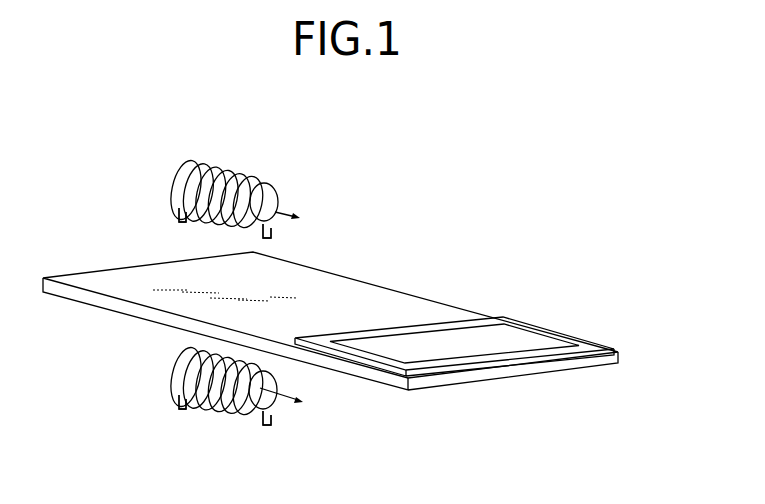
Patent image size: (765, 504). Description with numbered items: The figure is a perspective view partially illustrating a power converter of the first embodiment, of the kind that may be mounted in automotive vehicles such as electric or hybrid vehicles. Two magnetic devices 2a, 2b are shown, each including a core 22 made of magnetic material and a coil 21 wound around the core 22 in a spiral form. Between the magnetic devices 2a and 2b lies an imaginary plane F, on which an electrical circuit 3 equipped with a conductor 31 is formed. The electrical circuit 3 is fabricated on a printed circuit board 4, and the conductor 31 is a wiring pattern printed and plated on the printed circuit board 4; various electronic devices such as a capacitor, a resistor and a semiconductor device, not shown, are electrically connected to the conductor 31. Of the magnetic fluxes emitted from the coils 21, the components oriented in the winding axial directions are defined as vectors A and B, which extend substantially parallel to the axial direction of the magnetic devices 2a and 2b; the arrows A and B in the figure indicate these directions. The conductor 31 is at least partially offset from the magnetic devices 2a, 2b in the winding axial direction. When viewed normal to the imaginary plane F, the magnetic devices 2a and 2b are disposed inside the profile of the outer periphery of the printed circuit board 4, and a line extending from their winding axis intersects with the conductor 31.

The magnetic device 2a is at (222, 172).
The magnetic device 2b is at (192, 408).
The coil 21 is at (185, 158).
The core 22 is at (266, 200).
The electrical circuit 3 is at (475, 297).
The conductor 31 is at (492, 323).
The printed circuit board 4 is at (330, 300).
The imaginary plane F is at (353, 303).
The vector A is at (293, 202).
The vector B is at (282, 387).